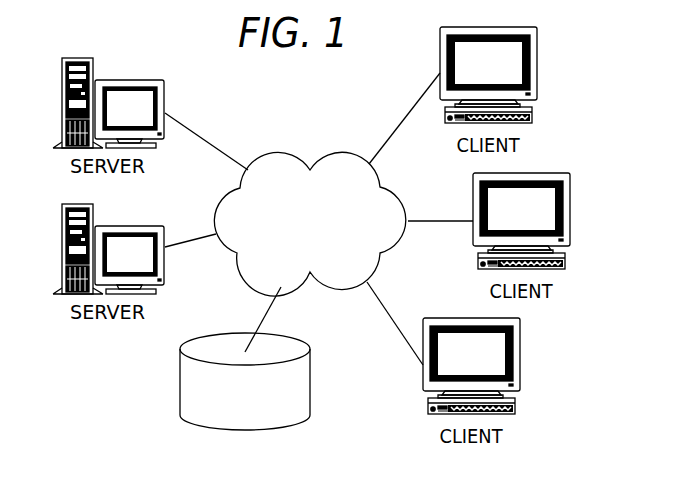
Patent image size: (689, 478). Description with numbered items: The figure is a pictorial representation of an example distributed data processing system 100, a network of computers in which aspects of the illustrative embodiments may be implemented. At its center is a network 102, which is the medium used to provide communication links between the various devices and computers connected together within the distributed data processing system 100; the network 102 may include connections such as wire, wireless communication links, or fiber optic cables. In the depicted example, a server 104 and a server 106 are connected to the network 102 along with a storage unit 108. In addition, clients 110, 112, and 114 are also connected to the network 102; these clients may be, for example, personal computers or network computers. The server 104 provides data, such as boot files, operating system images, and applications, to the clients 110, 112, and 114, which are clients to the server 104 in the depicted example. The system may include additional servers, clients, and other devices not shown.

The distributed data processing system 100 is at (140, 360).
The network 102 is at (281, 156).
The server 104 is at (130, 80).
The server 106 is at (130, 227).
The storage unit 108 is at (310, 372).
The client 110 is at (537, 67).
The client 112 is at (570, 213).
The client 114 is at (522, 360).